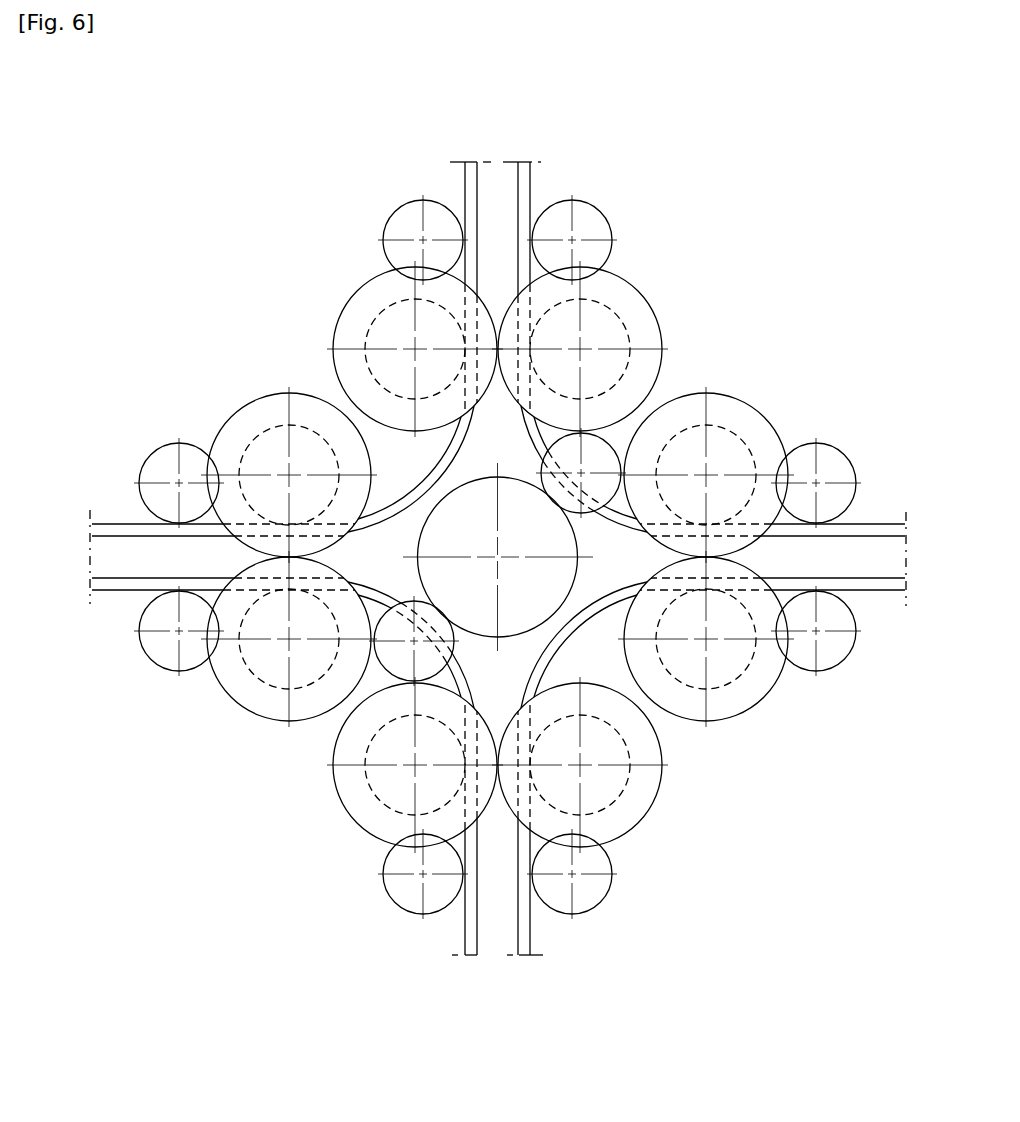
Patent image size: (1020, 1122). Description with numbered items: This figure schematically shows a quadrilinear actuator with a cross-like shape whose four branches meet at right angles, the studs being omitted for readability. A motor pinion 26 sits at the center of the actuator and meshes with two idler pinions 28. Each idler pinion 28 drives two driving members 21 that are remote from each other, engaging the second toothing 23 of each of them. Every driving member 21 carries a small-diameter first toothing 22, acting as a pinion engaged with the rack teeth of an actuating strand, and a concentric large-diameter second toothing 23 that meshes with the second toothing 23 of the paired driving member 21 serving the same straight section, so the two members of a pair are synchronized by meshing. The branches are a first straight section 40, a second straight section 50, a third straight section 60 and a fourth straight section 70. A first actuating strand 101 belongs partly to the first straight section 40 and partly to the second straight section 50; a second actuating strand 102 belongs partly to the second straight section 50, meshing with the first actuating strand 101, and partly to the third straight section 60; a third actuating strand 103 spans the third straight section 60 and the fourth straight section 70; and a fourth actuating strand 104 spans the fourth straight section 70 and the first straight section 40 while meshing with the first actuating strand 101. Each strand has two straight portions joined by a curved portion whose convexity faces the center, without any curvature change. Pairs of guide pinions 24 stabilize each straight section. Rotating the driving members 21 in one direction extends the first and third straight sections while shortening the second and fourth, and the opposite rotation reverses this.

The driving member 21 is at (328, 325).
The first toothing 22 is at (743, 676).
The second toothing 23 is at (782, 675).
The guide pinion 24 is at (421, 239).
The motor pinion 26 is at (540, 590).
The idler pinion 28 is at (614, 469).
The first straight section 40 is at (489, 970).
The second straight section 50 is at (82, 548).
The third straight section 60 is at (502, 150).
The fourth straight section 70 is at (912, 570).
The first actuating strand 101 is at (465, 940).
The second actuating strand 102 is at (90, 516).
The third actuating strand 103 is at (525, 181).
The fourth actuating strand 104 is at (531, 940).